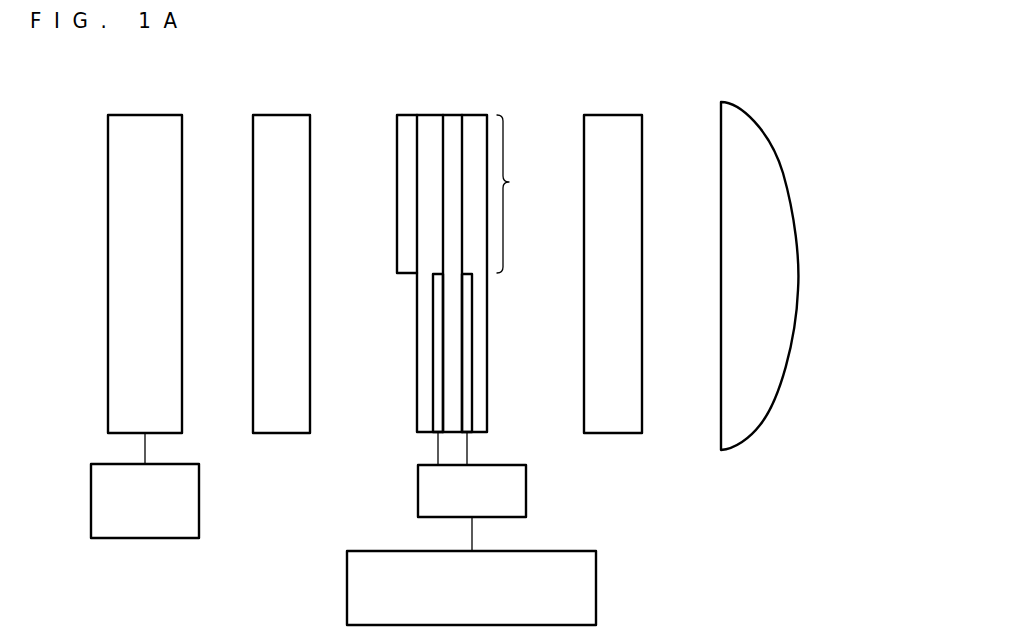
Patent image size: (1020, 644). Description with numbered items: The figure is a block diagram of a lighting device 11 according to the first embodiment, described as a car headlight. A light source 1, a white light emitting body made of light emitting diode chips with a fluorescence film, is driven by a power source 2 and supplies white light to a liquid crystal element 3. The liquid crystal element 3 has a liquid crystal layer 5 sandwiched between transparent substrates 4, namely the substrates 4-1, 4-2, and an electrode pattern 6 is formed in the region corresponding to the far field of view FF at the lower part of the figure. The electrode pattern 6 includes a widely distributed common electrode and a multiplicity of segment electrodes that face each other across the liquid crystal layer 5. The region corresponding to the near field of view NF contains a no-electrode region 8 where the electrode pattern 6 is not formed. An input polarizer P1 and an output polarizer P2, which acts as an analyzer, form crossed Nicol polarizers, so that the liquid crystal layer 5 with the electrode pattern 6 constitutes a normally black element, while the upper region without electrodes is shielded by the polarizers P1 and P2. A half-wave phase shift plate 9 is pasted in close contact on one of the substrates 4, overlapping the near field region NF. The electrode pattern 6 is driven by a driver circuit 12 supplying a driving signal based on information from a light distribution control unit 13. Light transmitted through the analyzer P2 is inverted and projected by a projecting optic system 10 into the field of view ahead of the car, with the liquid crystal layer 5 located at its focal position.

The light source 1 is at (145, 115).
The power source 2 is at (199, 490).
The input polarizer P1 is at (283, 115).
The output polarizer P2 is at (614, 115).
The liquid crystal element 3 is at (434, 230).
The transparent substrates 4 is at (424, 217).
The transparent substrate 4-1 is at (430, 115).
The transparent substrate 4-2 is at (476, 115).
The liquid crystal layer 5 is at (450, 306).
The electrode pattern 6 is at (438, 353).
The no-electrode region 8 is at (511, 194).
The phase shift plate 9 is at (397, 181).
The near field of view NF is at (417, 231).
The far field of view FF is at (417, 347).
The projecting optic system 10 is at (784, 172).
The lighting device 11 is at (822, 110).
The driver circuit 12 is at (526, 490).
The light distribution control unit 13 is at (597, 586).